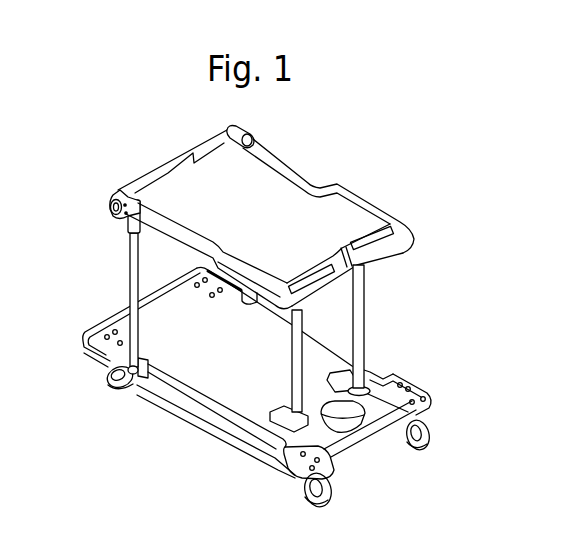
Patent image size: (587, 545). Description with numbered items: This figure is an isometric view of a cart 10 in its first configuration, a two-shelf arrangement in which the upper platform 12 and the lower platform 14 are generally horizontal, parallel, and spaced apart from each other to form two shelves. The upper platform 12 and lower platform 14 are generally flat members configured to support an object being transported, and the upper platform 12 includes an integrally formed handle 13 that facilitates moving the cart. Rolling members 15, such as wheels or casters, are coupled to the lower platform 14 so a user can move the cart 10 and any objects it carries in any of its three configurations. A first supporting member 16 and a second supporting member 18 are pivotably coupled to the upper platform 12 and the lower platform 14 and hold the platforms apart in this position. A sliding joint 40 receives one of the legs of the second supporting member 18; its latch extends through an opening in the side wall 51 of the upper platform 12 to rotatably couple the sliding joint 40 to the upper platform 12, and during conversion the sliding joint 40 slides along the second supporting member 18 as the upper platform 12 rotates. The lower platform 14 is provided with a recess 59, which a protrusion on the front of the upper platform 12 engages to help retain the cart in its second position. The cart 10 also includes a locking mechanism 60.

The cart 10 is at (392, 177).
The upper platform 12 is at (282, 189).
The handle 13 is at (380, 253).
The lower platform 14 is at (197, 424).
The rolling members 15 is at (110, 379).
The first supporting member 16 is at (367, 311).
The second supporting member 18 is at (124, 268).
The sliding joint 40 is at (108, 203).
The side wall 51 is at (180, 243).
The recess 59 is at (333, 401).
The locking mechanism 60 is at (377, 453).